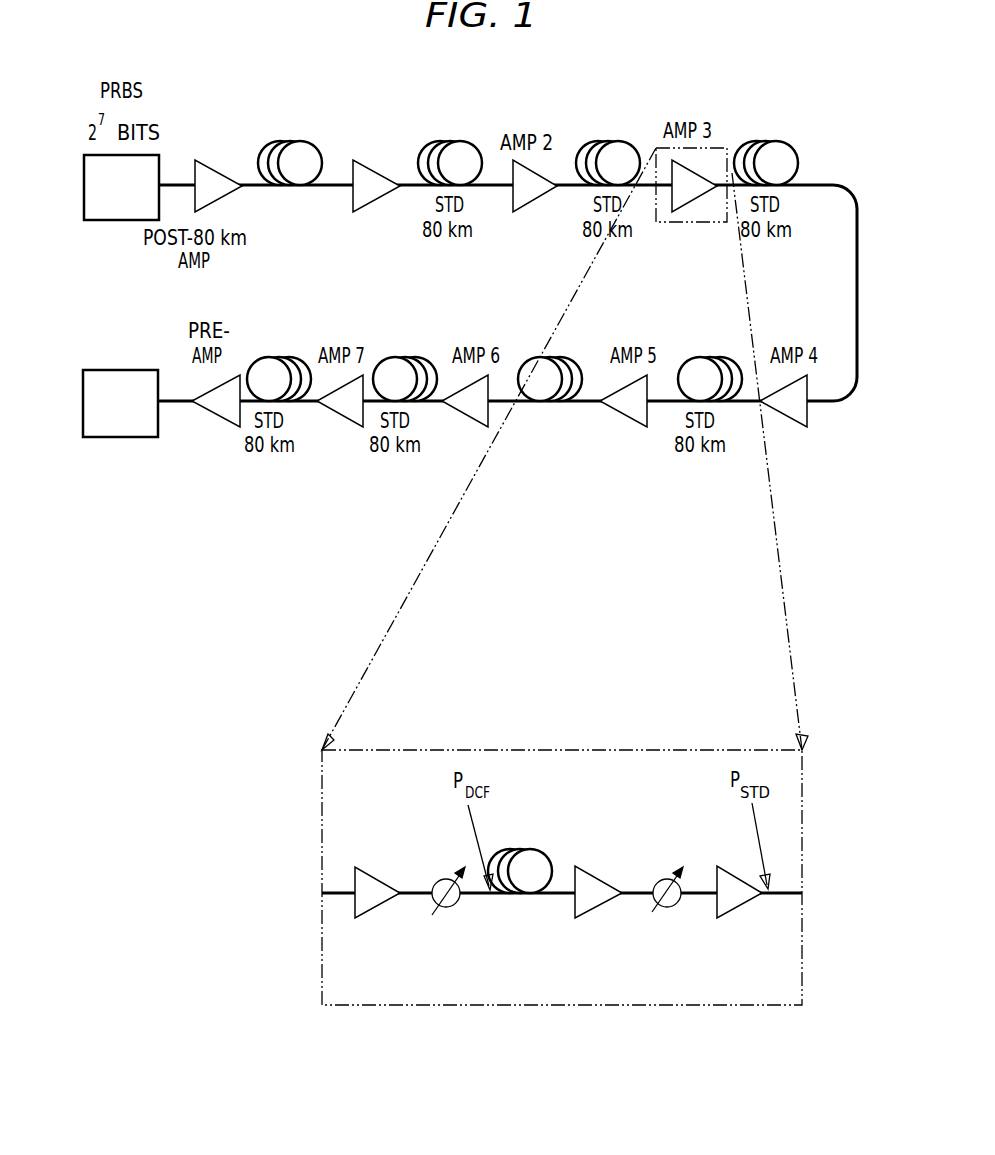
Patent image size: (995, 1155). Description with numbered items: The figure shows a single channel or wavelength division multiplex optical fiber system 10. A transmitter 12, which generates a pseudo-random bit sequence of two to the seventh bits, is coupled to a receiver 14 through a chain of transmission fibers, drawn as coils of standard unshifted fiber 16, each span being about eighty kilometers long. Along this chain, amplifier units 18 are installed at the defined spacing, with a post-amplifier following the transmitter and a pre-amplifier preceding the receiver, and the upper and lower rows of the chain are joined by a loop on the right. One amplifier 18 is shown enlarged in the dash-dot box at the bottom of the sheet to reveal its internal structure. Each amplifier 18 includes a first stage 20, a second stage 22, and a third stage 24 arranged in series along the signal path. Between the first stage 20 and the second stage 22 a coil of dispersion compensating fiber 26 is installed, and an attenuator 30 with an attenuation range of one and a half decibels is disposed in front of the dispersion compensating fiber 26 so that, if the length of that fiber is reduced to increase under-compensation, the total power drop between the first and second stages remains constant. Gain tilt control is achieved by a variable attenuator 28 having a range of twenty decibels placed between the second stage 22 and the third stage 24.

The optical fiber system 10 is at (797, 84).
The transmitter 12 is at (112, 220).
The receiver 14 is at (110, 437).
The standard unshifted fiber 16 is at (332, 187).
The amplifier unit 18 is at (372, 205).
The first stage 20 is at (377, 873).
The second stage 22 is at (602, 878).
The third stage 24 is at (730, 867).
The dispersion compensating fiber 26 is at (515, 895).
The variable attenuator 28 is at (662, 873).
The attenuator 30 is at (462, 903).